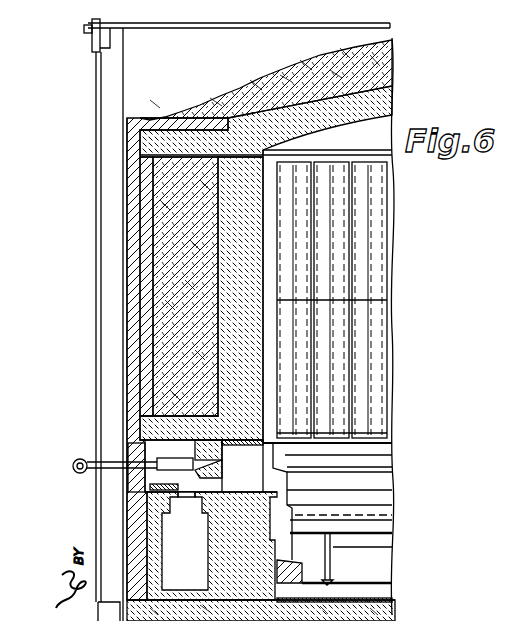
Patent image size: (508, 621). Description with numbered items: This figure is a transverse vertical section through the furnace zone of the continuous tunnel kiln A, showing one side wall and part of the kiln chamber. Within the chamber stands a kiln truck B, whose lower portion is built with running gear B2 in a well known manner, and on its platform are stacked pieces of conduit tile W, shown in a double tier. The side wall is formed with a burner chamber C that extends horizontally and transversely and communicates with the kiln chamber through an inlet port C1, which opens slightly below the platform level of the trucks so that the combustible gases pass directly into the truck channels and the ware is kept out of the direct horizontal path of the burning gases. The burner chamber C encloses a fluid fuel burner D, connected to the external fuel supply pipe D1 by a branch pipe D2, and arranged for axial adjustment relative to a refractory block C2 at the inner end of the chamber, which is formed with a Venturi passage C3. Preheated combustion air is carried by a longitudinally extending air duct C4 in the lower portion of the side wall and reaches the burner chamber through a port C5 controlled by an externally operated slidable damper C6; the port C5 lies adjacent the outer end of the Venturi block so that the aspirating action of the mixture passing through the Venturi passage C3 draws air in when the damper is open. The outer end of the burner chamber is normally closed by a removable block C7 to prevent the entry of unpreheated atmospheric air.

The continuous tunnel kiln A is at (165, 118).
The conduit tile W is at (391, 186).
The kiln car or truck B is at (392, 528).
The running gear B2 is at (332, 556).
The burner chamber C is at (152, 452).
The inlet port C1 is at (246, 446).
The refractory block C2 is at (216, 471).
The Venturi passage C3 is at (219, 452).
The air duct C4 is at (185, 541).
The port C5 is at (184, 500).
The slidable damper C6 is at (158, 488).
The removable block C7 is at (133, 482).
The fluid fuel burner D is at (165, 466).
The fuel supply pipe D1 is at (76, 473).
The branch pipe D2 is at (72, 466).